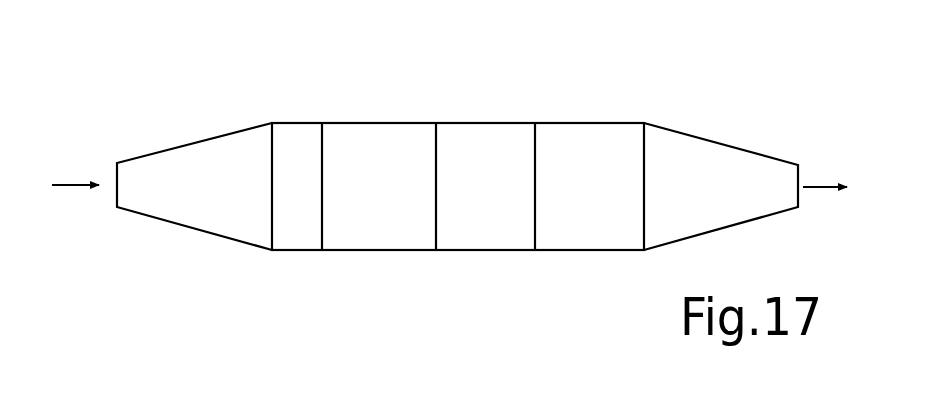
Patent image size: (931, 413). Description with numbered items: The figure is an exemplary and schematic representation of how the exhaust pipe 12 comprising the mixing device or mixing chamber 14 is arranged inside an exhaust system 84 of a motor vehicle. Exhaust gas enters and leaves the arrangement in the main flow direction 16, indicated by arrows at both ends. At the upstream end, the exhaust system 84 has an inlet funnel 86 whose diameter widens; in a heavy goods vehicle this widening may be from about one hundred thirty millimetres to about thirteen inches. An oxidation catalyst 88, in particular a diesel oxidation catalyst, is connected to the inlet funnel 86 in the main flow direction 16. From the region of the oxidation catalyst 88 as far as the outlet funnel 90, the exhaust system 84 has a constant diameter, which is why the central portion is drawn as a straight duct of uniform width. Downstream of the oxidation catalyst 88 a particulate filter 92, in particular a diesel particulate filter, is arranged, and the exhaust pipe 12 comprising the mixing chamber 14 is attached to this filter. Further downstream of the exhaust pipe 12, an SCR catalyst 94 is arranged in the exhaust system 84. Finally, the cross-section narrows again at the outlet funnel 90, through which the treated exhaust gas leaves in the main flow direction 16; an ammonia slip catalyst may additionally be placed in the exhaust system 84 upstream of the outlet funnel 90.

The exhaust system 84 is at (215, 114).
The inlet funnel 86 is at (189, 210).
The oxidation catalyst 88 is at (299, 135).
The particulate filter 92 is at (386, 133).
The mixing chamber 14 is at (474, 132).
The exhaust pipe 12 is at (510, 132).
The SCR catalyst 94 is at (600, 135).
The outlet funnel 90 is at (688, 150).
The main flow direction 16 is at (73, 185).